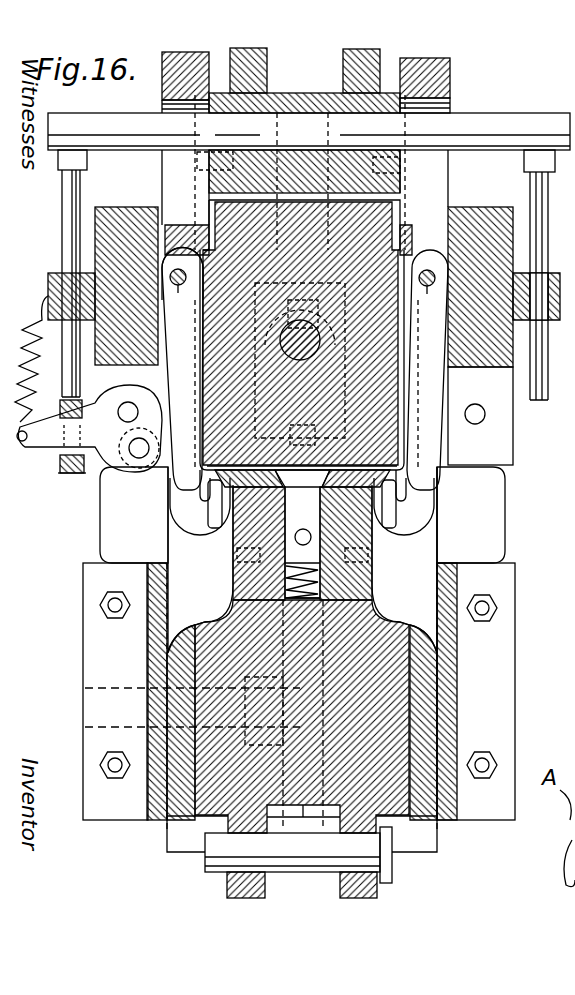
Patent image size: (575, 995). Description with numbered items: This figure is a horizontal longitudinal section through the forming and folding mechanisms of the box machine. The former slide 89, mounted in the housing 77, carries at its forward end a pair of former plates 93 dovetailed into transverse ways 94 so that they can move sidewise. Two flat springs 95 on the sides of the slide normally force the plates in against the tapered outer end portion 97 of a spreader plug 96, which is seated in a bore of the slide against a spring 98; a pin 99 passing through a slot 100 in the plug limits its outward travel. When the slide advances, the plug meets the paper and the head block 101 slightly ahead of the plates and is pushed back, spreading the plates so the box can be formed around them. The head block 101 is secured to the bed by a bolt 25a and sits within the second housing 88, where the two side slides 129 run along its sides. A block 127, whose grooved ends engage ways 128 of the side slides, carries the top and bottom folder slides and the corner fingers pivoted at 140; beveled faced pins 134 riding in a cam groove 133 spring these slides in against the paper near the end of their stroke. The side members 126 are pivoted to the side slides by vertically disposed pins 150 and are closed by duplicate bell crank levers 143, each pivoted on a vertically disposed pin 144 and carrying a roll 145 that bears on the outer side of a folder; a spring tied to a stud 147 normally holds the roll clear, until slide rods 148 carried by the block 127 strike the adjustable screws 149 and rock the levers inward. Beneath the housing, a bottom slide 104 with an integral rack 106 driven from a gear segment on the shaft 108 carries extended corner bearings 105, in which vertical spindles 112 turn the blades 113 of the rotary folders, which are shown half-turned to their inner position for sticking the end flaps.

The block 127 is at (292, 100).
The side slides 129 is at (452, 68).
The ways 128 is at (405, 78).
The slide rods 148 is at (62, 190).
The pivotal connection 140 is at (205, 165).
The side members 126 is at (222, 245).
The bolt 25a is at (340, 295).
The vertically disposed pins 150 is at (160, 262).
The head block 101 is at (224, 352).
The former plates 93 is at (215, 438).
The cam groove 133 is at (345, 395).
The beveled faced pins 134 is at (404, 472).
The second housing 88 is at (480, 416).
The tapered outer end portion 97 is at (302, 479).
The flat springs 95 is at (236, 540).
The spreader plug 96 is at (302, 542).
The slot 100 is at (322, 585).
The blade 113 is at (192, 513).
The vertical spindles 112 is at (404, 506).
The roll 145 is at (170, 478).
The corner bearings 105 is at (166, 549).
The pin 99 is at (376, 546).
The transverse ways 94 is at (434, 509).
The spring 98 is at (212, 592).
The former slide 89 is at (392, 615).
The shaft 108 is at (85, 715).
The housing 77 is at (462, 696).
The rack 106 is at (300, 818).
The bottom slide 104 is at (437, 838).
The vertically disposed pin 144 is at (122, 418).
The stud 147 is at (48, 293).
The bell crank lever 143 is at (34, 462).
The adjustable screws 149 is at (65, 478).